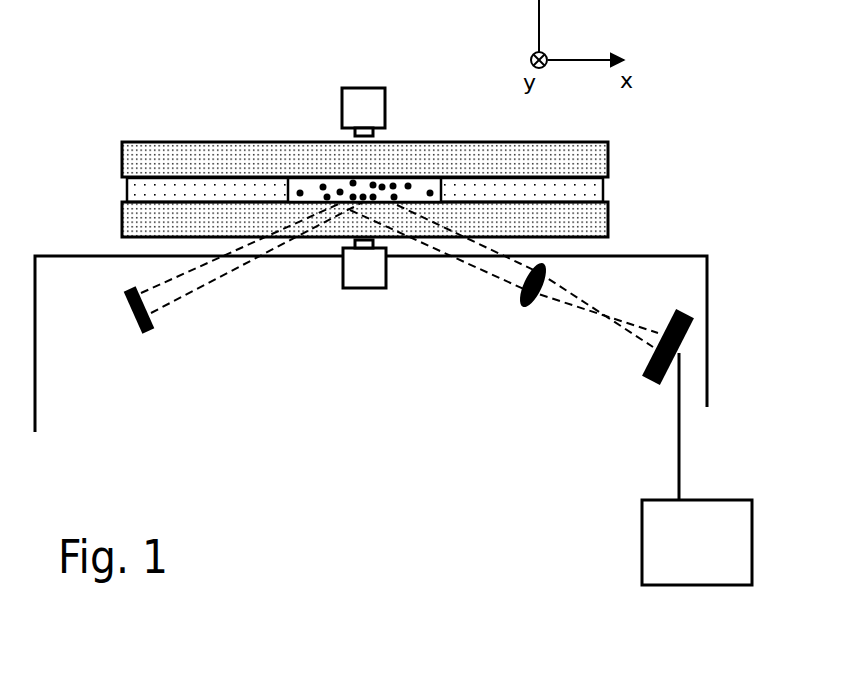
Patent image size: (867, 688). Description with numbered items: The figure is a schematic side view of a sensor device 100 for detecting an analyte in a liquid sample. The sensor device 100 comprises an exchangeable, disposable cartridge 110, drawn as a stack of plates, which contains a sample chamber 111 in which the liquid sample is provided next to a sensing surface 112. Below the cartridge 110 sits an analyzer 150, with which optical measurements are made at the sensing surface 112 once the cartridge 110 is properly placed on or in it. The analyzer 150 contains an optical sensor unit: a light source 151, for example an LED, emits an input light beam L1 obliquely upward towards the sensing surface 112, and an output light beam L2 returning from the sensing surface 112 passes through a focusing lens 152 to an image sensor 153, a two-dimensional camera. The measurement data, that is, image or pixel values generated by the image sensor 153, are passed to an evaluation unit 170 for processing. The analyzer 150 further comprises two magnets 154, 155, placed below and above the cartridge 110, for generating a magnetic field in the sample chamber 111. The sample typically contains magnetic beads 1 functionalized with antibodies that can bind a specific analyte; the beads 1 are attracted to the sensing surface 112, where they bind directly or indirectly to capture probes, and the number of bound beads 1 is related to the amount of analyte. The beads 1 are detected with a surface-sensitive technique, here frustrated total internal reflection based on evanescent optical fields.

The magnetic beads 1 is at (408, 186).
The sensor device 100 is at (697, 148).
The cartridge 110 is at (419, 157).
The sample chamber 111 is at (290, 184).
The sensing surface 112 is at (309, 186).
The analyzer 150 is at (408, 317).
The light source 151 is at (133, 317).
The focusing lens 152 is at (523, 305).
The image sensor 153 is at (653, 383).
The magnet 154 is at (360, 285).
The magnet 155 is at (355, 100).
The evaluation unit 170 is at (697, 469).
The input light beam L1 is at (207, 280).
The output light beam L2 is at (488, 267).